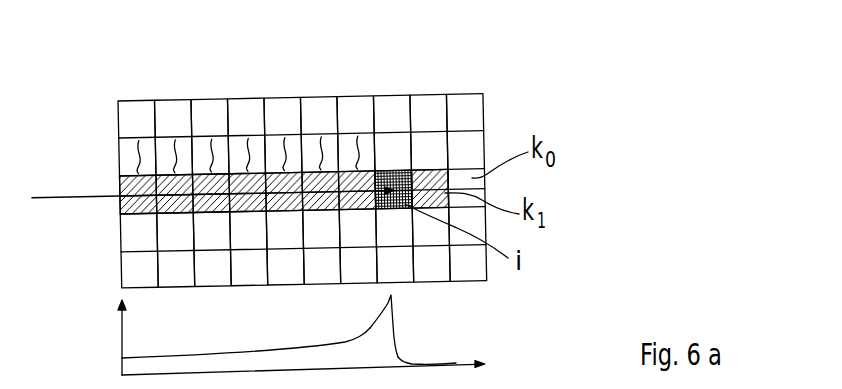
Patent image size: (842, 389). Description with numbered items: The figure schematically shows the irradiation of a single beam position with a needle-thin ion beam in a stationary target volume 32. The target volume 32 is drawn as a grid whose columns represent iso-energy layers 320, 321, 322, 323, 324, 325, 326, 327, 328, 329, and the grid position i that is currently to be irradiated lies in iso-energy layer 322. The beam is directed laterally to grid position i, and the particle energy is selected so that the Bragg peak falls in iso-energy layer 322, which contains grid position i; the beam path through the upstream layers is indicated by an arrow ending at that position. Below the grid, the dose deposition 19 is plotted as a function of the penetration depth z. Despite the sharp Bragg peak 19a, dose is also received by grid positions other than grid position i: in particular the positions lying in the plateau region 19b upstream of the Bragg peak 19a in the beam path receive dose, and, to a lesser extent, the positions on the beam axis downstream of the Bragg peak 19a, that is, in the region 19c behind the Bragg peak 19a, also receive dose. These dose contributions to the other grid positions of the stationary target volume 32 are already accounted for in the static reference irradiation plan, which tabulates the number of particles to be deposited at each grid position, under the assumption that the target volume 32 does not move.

The target volume 32 is at (301, 145).
The iso-energy layer 320 is at (458, 94).
The iso-energy layer 321 is at (422, 95).
The iso-energy layer 322 is at (387, 96).
The iso-energy layer 323 is at (350, 96).
The iso-energy layer 324 is at (313, 97).
The iso-energy layer 325 is at (278, 98).
The iso-energy layer 326 is at (243, 98).
The iso-energy layer 327 is at (208, 99).
The iso-energy layer 328 is at (172, 100).
The iso-energy layer 329 is at (135, 101).
The dose deposition 19 is at (310, 330).
The Bragg peak 19a is at (388, 300).
The plateau region 19b is at (262, 352).
The region behind Bragg peak 19c is at (412, 364).